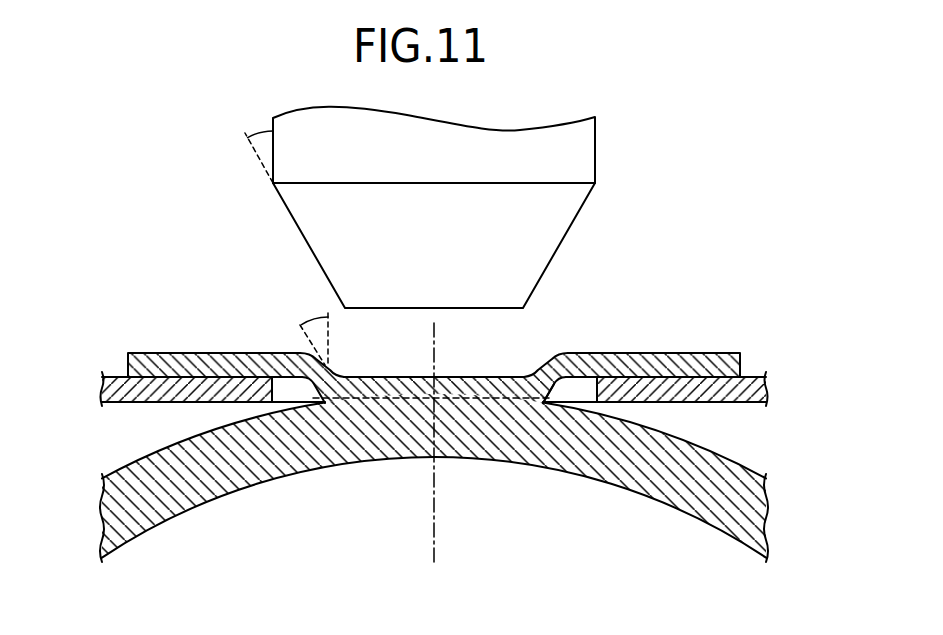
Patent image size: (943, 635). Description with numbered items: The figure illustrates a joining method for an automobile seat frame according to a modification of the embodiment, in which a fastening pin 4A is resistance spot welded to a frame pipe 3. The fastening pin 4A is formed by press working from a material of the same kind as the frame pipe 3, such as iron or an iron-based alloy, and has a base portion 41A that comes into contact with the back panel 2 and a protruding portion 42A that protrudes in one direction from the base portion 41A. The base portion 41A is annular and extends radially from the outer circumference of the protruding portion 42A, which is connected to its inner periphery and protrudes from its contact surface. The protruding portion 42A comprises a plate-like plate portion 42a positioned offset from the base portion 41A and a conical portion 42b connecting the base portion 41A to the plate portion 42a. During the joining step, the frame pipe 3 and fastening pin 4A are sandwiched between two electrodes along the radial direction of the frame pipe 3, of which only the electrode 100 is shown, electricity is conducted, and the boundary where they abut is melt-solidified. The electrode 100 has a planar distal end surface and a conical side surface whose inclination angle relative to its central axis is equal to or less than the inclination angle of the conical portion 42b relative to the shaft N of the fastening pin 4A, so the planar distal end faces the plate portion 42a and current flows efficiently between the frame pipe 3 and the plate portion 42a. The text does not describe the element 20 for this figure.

The electrode 100 is at (583, 153).
The back panel 2 is at (763, 377).
The frame pipe 3 is at (223, 480).
The fastening pin 4A is at (695, 352).
The base portion 41A is at (218, 352).
The adhesive layer 20 is at (595, 387).
The plate portion 42a is at (400, 377).
The conical portion 42b is at (330, 370).
The protruding portion 42A is at (547, 401).
The shaft N is at (437, 522).